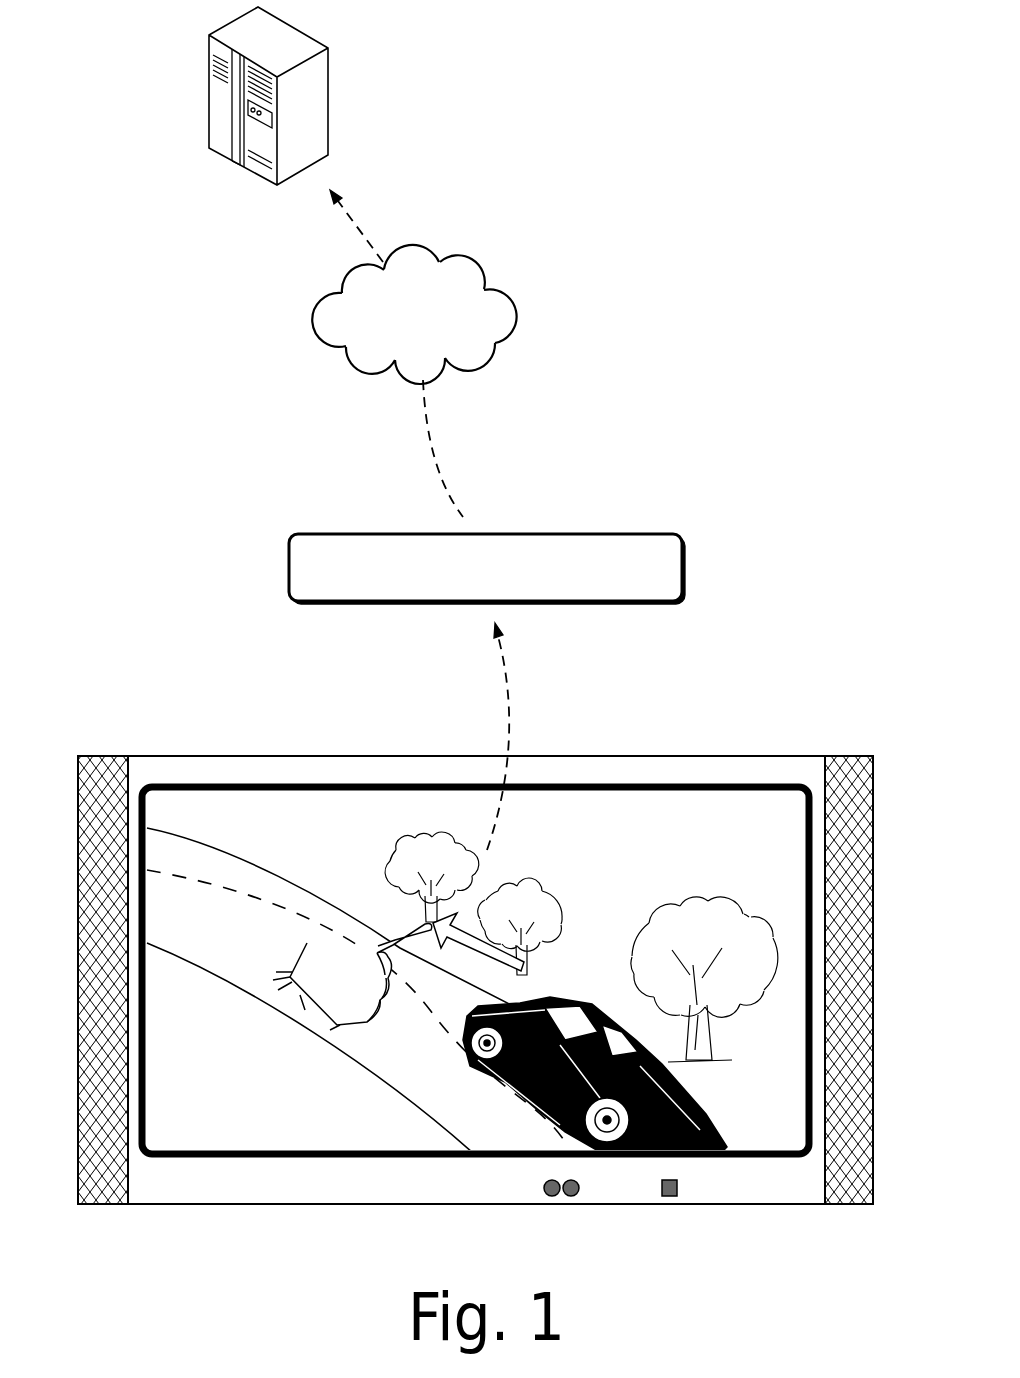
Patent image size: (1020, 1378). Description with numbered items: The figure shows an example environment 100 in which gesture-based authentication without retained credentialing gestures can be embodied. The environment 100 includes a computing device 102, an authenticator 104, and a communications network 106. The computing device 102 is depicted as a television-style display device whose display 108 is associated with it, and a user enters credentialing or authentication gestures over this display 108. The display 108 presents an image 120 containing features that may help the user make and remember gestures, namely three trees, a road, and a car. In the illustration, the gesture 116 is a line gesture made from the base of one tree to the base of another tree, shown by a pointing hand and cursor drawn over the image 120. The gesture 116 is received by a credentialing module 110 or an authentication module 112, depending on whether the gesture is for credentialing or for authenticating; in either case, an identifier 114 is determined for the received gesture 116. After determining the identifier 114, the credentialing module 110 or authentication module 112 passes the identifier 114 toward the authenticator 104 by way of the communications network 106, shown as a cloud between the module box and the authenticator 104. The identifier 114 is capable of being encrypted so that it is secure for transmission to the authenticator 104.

The environment 100 is at (776, 97).
The computing device 102 is at (815, 1238).
The authenticator 104 is at (232, 199).
The communications network 106 is at (432, 325).
The display 108 is at (250, 1165).
The credentialing module 110 is at (487, 569).
The authentication module 112 is at (618, 591).
The identifier 114 is at (513, 478).
The gesture 116 is at (475, 715).
The image 120 is at (720, 802).